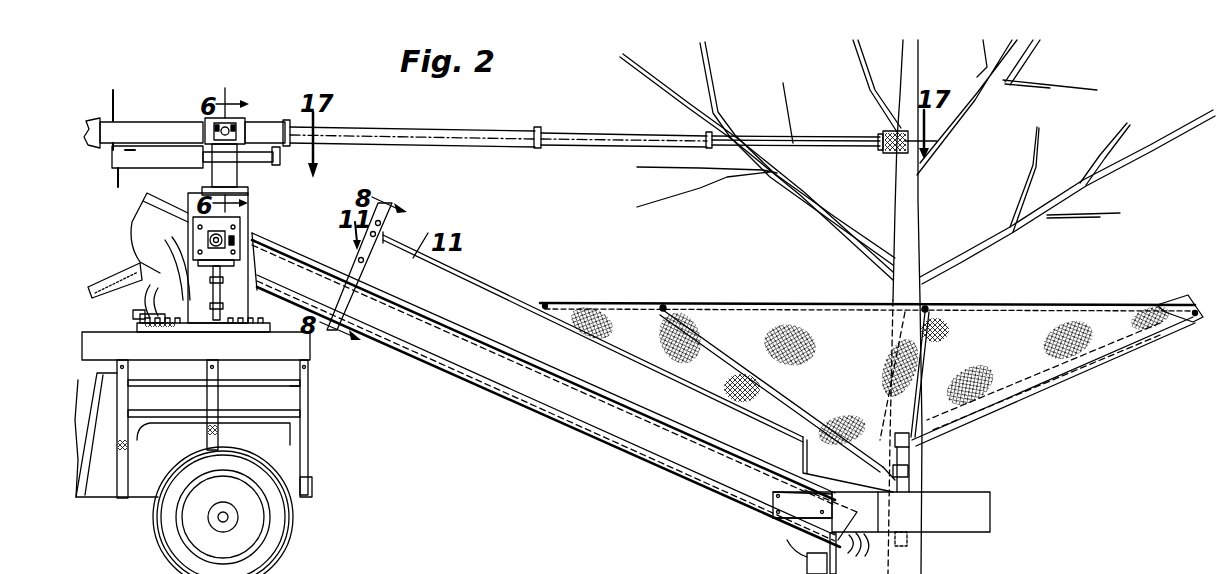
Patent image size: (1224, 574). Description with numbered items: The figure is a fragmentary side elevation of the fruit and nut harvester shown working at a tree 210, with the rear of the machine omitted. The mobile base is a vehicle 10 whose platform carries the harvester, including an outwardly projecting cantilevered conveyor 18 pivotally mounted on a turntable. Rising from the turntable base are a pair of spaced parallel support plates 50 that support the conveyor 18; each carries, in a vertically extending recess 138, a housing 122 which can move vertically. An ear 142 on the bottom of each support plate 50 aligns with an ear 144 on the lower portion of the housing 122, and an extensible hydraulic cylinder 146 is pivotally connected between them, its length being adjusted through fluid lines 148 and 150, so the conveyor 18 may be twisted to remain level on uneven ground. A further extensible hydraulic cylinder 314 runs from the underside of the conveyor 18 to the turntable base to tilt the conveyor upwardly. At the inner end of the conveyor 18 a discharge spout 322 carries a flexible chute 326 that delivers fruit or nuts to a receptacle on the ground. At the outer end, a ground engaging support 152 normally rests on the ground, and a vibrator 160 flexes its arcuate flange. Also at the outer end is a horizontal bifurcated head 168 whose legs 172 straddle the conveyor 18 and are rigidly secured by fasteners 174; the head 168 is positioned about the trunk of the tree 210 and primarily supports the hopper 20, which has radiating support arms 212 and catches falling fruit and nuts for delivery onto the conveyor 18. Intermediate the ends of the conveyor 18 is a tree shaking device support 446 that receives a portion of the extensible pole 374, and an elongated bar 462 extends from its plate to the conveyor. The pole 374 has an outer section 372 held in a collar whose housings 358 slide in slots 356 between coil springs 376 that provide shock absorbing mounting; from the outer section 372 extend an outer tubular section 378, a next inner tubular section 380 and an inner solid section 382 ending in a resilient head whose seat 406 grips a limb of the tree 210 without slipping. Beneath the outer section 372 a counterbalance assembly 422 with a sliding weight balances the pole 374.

The vehicle 10 is at (320, 463).
The conveyor 18 is at (525, 414).
The hopper 20 is at (618, 296).
The support plates 50 is at (252, 262).
The housing 122 is at (244, 224).
The recess 138 is at (236, 212).
The ear 142 is at (210, 326).
The ear 144 is at (236, 251).
The extensible hydraulic cylinder 146 is at (237, 281).
The fluid line 148 is at (212, 284).
The fluid line 150 is at (211, 307).
The ground engaging support 152 is at (842, 568).
The vibrator 160 is at (807, 567).
The bifurcated head 168 is at (952, 540).
The legs 172 is at (785, 506).
The fasteners 174 is at (772, 493).
The tree 210 is at (913, 233).
The support arms 212 is at (795, 394).
The extensible hydraulic cylinder 314 is at (261, 326).
The discharge spout 322 is at (143, 246).
The flexible chute 326 is at (133, 315).
The slots 356 is at (210, 121).
The housings 358 is at (236, 121).
The outer section 372 is at (138, 124).
The extensible pole 374 is at (410, 124).
The coil springs 376 is at (225, 169).
The outer tubular section 378 is at (493, 147).
The next inner tubular section 380 is at (631, 134).
The inner section 382 is at (772, 136).
The seat 406 is at (890, 153).
The counterbalance assembly 422 is at (165, 168).
The tree shaking device support 446 is at (375, 268).
The elongated bar 462 is at (486, 281).